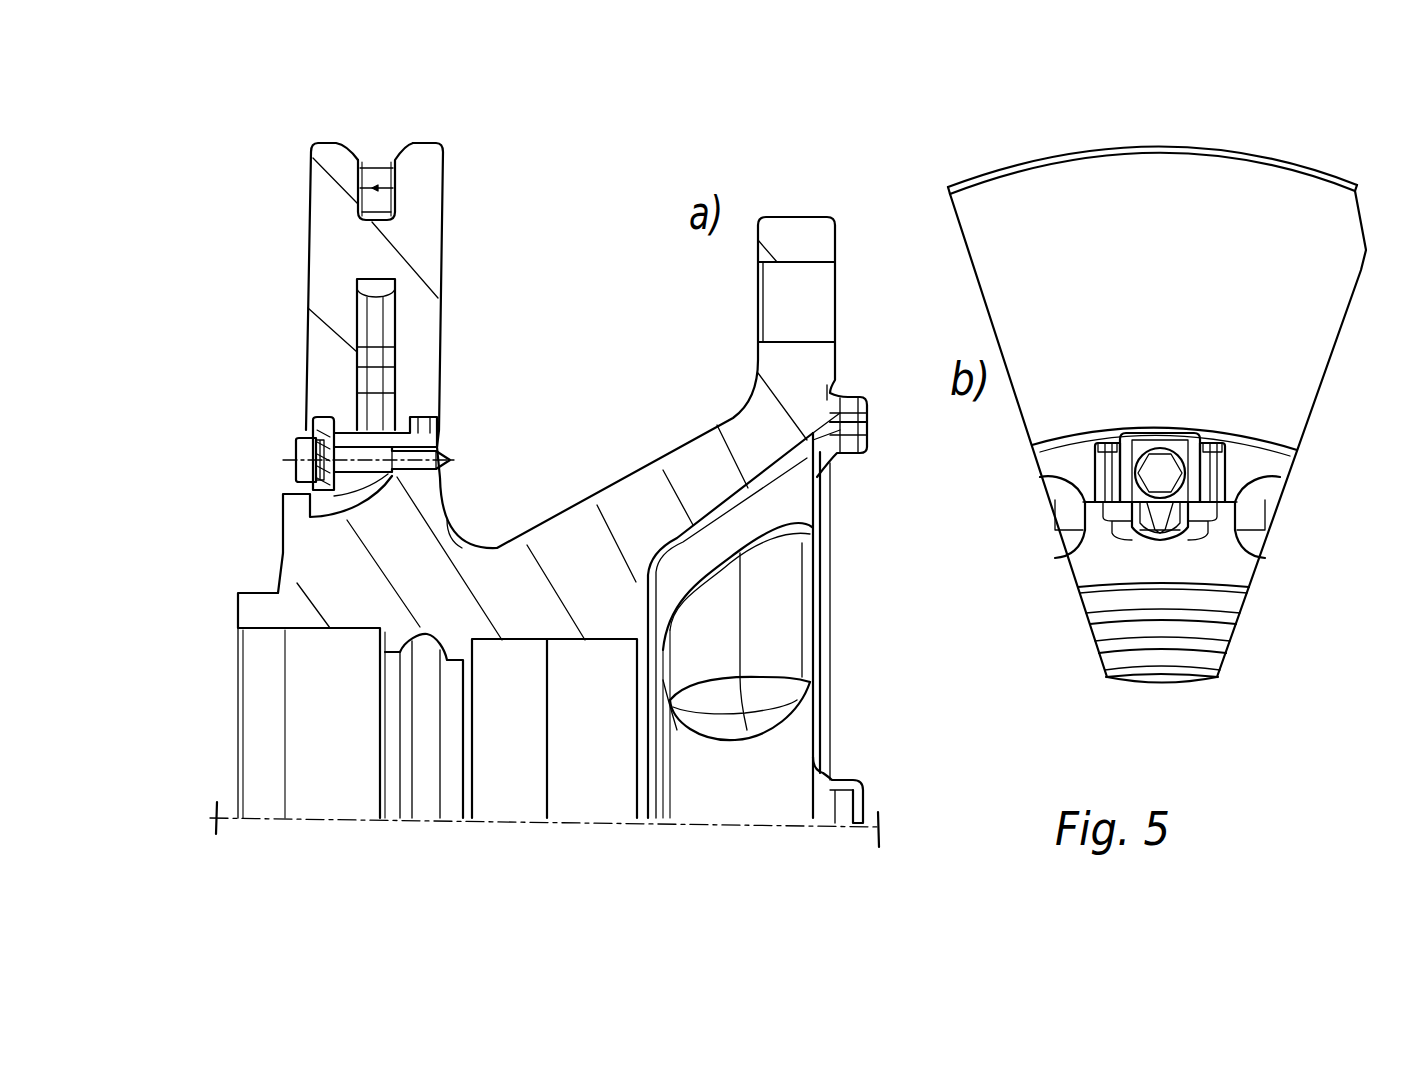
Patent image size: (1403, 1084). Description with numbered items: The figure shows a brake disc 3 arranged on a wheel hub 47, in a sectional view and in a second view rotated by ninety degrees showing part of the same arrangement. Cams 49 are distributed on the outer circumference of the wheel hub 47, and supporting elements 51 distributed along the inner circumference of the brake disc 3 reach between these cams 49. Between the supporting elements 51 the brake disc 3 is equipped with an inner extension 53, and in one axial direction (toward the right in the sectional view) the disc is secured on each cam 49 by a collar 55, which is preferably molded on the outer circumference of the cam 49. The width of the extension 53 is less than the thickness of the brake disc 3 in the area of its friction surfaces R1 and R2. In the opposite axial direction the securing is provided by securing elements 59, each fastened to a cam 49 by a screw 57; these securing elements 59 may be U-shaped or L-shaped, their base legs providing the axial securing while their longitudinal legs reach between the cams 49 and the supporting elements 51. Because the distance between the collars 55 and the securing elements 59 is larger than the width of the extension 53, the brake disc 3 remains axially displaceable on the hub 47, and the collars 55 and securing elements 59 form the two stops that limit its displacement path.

In FIG. 5a, the friction surface R1 is at (443, 184).
In FIG. 5a, the friction surface R2 is at (310, 187).
In FIG. 5b, the brake disc 3 is at (1048, 175).
In FIG. 5a, the wheel hub 47 is at (441, 538).
In FIG. 5b, the wheel hub 47 is at (1225, 582).
In FIG. 5a, the cam 49 is at (432, 488).
In FIG. 5b, the supporting element 51 is at (1233, 483).
In FIG. 5a, the inner extension 53 is at (402, 418).
In FIG. 5a, the collar 55 is at (430, 409).
In FIG. 5a, the screw 57 is at (298, 456).
In FIG. 5b, the screw 57 is at (1158, 465).
In FIG. 5a, the securing element 59 is at (327, 413).
In FIG. 5b, the securing element 59 is at (1097, 444).